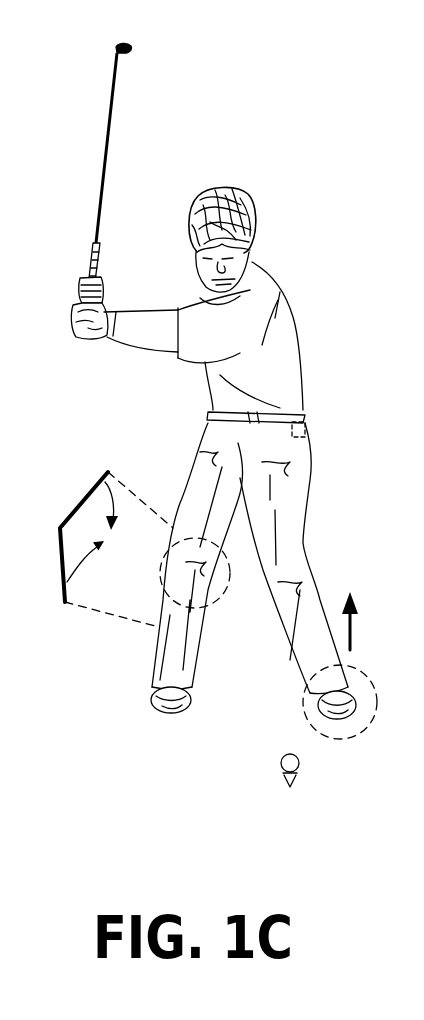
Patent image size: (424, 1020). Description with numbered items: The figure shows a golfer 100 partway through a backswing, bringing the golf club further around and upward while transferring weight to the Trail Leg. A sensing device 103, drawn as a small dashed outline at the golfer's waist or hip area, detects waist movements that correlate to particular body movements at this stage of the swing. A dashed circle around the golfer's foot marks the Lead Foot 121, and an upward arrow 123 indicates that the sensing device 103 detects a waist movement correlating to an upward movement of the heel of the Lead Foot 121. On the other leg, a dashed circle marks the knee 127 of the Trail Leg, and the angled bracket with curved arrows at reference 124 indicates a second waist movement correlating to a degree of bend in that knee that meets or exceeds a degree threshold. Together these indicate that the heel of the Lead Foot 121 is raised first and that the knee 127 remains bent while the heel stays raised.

The golfer 100 is at (212, 122).
The sensing device 103 is at (309, 431).
The Lead Foot 121 is at (348, 687).
The upward movement of the heel 123 is at (352, 632).
The degree of bend in the knee 124 is at (54, 505).
The knee 127 is at (168, 573).